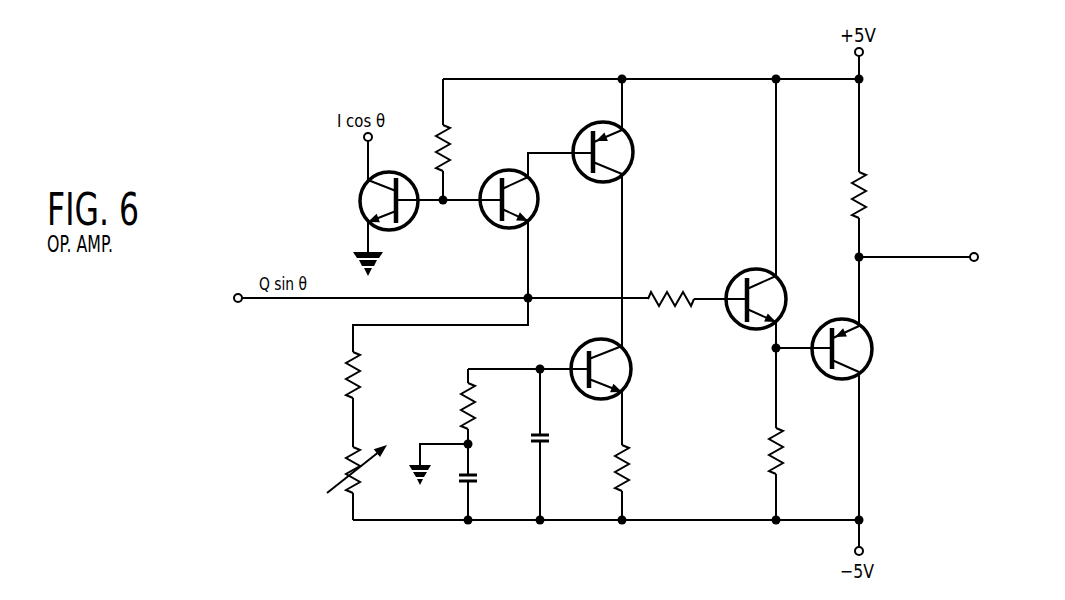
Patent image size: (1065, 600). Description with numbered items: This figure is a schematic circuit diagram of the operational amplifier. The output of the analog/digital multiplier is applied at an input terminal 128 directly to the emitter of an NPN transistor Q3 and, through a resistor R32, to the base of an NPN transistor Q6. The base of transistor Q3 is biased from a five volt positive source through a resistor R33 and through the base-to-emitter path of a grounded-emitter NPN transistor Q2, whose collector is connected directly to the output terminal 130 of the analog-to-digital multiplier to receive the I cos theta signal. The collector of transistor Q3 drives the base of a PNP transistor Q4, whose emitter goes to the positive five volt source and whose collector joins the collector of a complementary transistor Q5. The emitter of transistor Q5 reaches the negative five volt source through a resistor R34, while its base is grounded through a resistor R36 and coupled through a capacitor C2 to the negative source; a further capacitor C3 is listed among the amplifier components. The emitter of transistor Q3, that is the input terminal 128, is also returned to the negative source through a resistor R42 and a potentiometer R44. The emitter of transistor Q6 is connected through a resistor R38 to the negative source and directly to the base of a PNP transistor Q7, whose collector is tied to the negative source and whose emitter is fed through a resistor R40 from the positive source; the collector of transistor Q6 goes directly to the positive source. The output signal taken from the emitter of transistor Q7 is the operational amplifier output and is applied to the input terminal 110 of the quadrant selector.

The input terminal 110 is at (975, 261).
The input terminal 128 is at (239, 302).
The output terminal 130 is at (364, 141).
The NPN transistor Q2 is at (371, 201).
The NPN transistor Q3 is at (525, 199).
The PNP transistor Q4 is at (620, 152).
The transistor Q5 is at (616, 369).
The NPN transistor Q6 is at (769, 296).
The PNP transistor Q7 is at (858, 349).
The resistor R32 is at (671, 284).
The resistor R33 is at (463, 148).
The resistor R34 is at (641, 468).
The resistor R36 is at (487, 406).
The resistor R38 is at (796, 451).
The resistor R40 is at (880, 195).
The resistor R42 is at (373, 375).
The potentiometer R44 is at (363, 471).
The capacitor C2 is at (552, 424).
The capacitor C3 is at (481, 474).